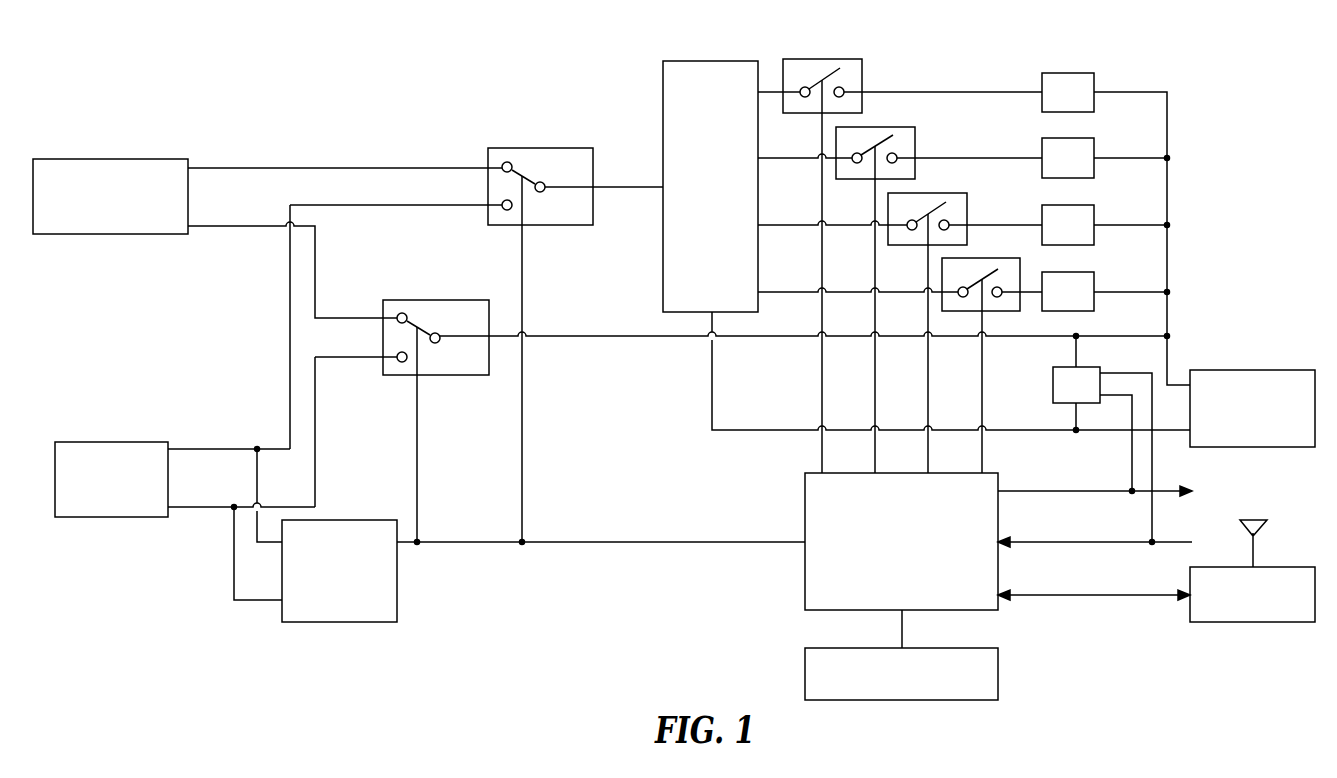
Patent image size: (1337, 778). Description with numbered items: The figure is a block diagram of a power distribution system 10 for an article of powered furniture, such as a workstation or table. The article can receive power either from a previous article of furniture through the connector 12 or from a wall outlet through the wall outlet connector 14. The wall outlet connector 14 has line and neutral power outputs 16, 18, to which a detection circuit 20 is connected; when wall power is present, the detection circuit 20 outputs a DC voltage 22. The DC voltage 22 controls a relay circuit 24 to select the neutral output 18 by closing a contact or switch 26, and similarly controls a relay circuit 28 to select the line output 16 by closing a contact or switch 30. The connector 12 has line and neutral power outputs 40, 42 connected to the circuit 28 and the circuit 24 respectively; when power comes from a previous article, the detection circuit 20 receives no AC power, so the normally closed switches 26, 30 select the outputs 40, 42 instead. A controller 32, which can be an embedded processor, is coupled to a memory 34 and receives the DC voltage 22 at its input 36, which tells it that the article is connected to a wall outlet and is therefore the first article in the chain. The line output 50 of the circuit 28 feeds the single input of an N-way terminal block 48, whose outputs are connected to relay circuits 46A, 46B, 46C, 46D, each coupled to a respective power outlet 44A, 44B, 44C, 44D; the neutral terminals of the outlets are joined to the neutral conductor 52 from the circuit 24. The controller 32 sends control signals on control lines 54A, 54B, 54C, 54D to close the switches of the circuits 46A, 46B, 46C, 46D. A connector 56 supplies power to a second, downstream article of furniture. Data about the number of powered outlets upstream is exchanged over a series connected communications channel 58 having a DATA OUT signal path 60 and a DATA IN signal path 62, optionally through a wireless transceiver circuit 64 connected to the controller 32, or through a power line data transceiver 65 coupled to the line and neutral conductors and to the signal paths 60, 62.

The power distribution system 10 is at (138, 70).
The connector 12 is at (112, 158).
The wall outlet connector 14 is at (112, 442).
The line power output 16 is at (178, 452).
The neutral power output 18 is at (178, 510).
The detection circuit 20 is at (342, 520).
The DC voltage 22 is at (405, 545).
The circuit 24 is at (436, 300).
The contact or switch 26 is at (438, 332).
The circuit 28 is at (542, 148).
The contact or switch 30 is at (542, 180).
The controller 32 is at (945, 612).
The memory 34 is at (1000, 674).
The input 36 is at (787, 545).
The line power output 40 is at (198, 170).
The neutral power output 42 is at (198, 228).
The power outlet 44A is at (1068, 73).
The power outlet 44B is at (1068, 138).
The power outlet 44C is at (1068, 205).
The power outlet 44D is at (1068, 272).
The circuit 46A is at (824, 58).
The circuit 46B is at (878, 126).
The circuit 46C is at (930, 192).
The circuit 46D is at (984, 257).
The terminal block 48 is at (712, 58).
The line output 50 is at (605, 189).
The neutral conductor 52 is at (562, 338).
The control line 54A is at (824, 355).
The control line 54B is at (877, 355).
The control line 54C is at (930, 355).
The control line 54D is at (984, 355).
The connector 56 is at (1255, 370).
The series connected communications channel 58 is at (1068, 468).
The DATA OUT signal path 60 is at (1050, 495).
The DATA IN signal path 62 is at (1050, 546).
The wireless transceiver circuit 64 is at (1278, 567).
The power line data transceiver 65 is at (1086, 367).